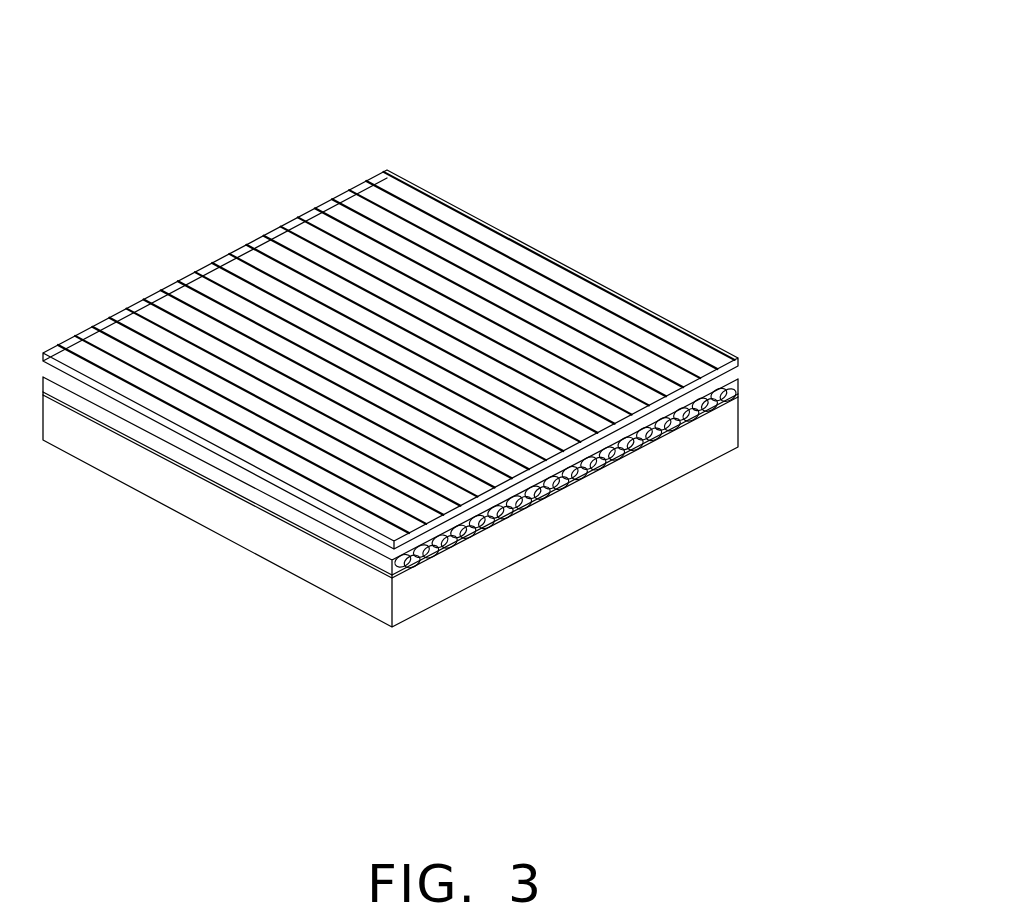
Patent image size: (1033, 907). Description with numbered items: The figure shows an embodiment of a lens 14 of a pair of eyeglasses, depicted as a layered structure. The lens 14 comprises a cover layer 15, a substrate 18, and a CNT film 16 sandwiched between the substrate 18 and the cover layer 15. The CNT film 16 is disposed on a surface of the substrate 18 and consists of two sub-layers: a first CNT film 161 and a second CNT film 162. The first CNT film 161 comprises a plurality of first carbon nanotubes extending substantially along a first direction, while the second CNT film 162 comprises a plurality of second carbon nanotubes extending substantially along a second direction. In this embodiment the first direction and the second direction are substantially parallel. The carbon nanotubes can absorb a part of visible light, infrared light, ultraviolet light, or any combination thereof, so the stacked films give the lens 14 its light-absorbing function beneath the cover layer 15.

The lens 14 is at (487, 98).
The cover layer 15 is at (741, 356).
The CNT film 16 is at (842, 368).
The first CNT film 161 is at (735, 390).
The second CNT film 162 is at (737, 378).
The substrate 18 is at (718, 431).